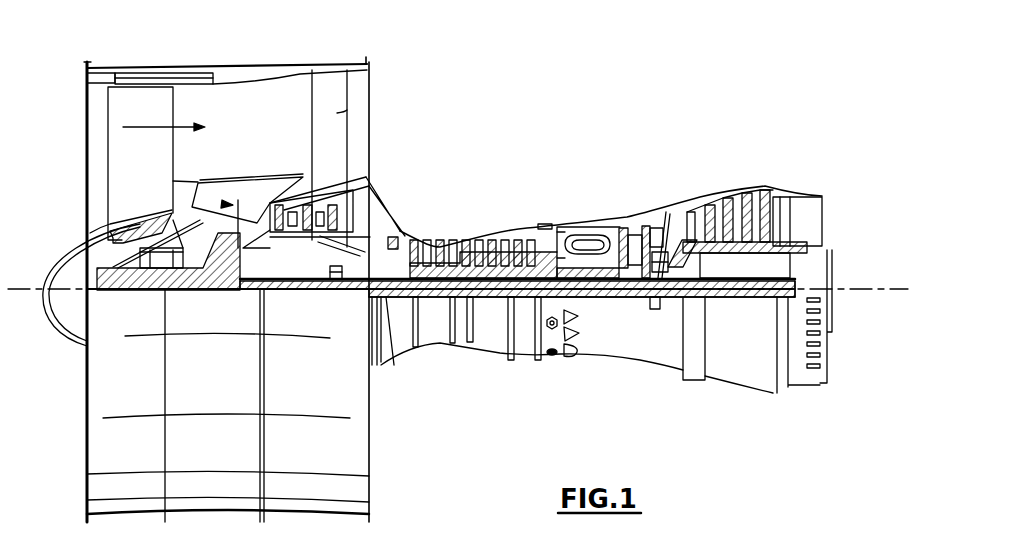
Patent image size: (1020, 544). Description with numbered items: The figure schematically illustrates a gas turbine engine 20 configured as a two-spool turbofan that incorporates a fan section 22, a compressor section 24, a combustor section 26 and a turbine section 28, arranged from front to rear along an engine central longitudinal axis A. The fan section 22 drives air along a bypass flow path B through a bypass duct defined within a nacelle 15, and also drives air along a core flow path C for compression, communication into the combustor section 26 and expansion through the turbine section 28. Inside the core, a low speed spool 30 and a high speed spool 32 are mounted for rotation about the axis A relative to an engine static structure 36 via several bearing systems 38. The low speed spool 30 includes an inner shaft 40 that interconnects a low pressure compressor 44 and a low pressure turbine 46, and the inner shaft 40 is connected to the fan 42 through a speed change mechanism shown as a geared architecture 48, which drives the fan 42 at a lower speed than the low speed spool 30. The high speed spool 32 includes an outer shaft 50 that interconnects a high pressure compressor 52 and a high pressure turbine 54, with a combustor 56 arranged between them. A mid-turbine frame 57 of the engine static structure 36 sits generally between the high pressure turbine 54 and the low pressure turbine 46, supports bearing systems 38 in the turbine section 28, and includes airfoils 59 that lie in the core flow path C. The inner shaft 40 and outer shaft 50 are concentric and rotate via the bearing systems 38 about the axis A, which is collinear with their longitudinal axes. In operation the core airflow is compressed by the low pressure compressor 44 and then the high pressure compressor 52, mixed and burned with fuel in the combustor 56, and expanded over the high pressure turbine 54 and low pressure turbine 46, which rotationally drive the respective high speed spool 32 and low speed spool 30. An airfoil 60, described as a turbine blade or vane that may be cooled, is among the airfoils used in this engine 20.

The nacelle 15 is at (230, 72).
The gas turbine engine 20 is at (590, 105).
The fan section 22 is at (176, 60).
The compressor section 24 is at (410, 213).
The combustor section 26 is at (584, 206).
The turbine section 28 is at (710, 170).
The low speed spool 30 is at (493, 302).
The high speed spool 32 is at (528, 232).
The engine static structure 36 is at (527, 368).
The bearing systems 38 is at (336, 280).
The inner shaft 40 is at (393, 345).
The fan 42 is at (159, 168).
The low pressure compressor 44 is at (345, 176).
The low pressure turbine 46 is at (735, 193).
The geared architecture 48 is at (233, 278).
The outer shaft 50 is at (592, 293).
The high pressure compressor 52 is at (478, 237).
The high pressure turbine 54 is at (637, 228).
The combustor 56 is at (583, 241).
The mid-turbine frame 57 is at (672, 210).
The airfoils 59 is at (685, 254).
The airfoil 60 is at (337, 113).
The engine central longitudinal axis A is at (889, 289).
The bypass flow path B is at (150, 126).
The core flow path C is at (230, 205).